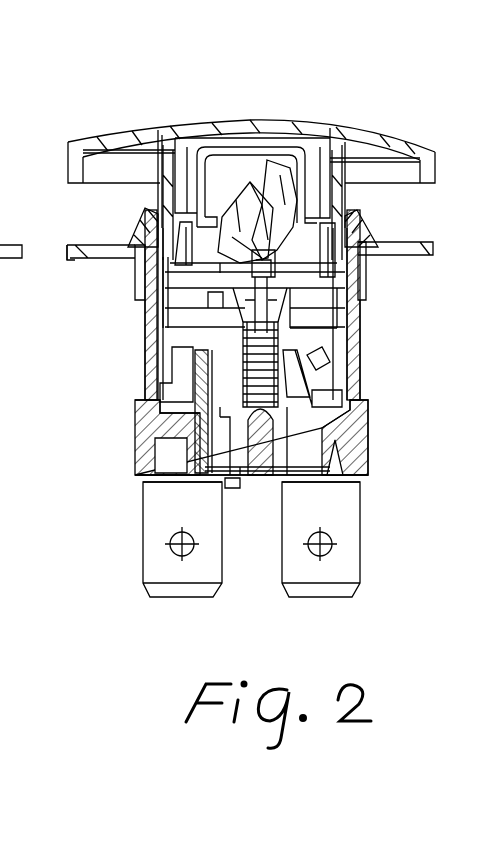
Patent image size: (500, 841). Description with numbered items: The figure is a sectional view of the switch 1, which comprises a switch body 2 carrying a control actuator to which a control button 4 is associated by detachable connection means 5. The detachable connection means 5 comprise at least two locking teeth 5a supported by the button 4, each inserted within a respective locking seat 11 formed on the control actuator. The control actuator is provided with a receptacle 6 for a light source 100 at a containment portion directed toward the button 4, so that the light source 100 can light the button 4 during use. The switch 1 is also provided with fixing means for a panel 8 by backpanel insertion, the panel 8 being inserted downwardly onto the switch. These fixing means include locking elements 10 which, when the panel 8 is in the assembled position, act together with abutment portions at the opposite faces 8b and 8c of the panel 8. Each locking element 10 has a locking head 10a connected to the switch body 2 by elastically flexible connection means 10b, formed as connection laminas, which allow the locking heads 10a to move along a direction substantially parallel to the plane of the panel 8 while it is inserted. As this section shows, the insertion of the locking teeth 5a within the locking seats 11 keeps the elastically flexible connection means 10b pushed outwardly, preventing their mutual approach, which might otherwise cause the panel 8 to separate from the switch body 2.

The switch 1 is at (110, 500).
The switch body 2 is at (147, 372).
The control button 4 is at (333, 137).
The detachable connection means 5 is at (143, 195).
The locking teeth 5a is at (166, 227).
The receptacle 6 is at (201, 205).
The panel 8 is at (90, 245).
The face of the panel 8b is at (66, 246).
The face of the panel 8c is at (92, 262).
The locking elements 10 is at (142, 312).
The locking head 10a is at (140, 223).
The elastically flexible connection means 10b is at (145, 328).
The locking seat 11 is at (183, 223).
The light source 100 is at (262, 180).